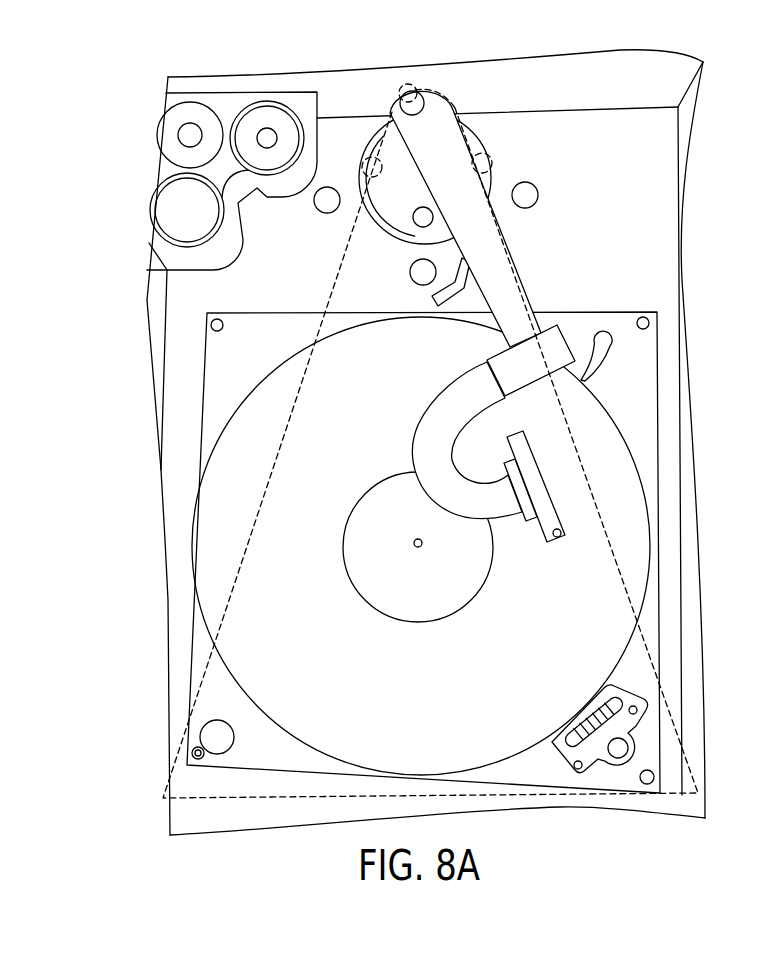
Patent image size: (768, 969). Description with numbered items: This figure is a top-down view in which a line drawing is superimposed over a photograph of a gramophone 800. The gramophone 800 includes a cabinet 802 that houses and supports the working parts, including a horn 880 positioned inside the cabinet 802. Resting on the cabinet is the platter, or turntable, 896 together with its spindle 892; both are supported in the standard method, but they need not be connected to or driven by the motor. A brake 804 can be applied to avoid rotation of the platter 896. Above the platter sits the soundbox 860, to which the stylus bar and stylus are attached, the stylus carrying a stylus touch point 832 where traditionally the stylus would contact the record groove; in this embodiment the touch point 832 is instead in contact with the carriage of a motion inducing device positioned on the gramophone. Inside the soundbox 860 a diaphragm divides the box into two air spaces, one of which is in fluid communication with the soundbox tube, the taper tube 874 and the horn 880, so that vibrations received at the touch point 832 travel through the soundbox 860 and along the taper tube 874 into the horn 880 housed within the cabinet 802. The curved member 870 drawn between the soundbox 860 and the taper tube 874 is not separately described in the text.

The gramophone 800 is at (113, 393).
The cabinet 802 is at (630, 138).
The brake 804 is at (601, 350).
The stylus touch point 832 is at (555, 540).
The soundbox 860 is at (547, 478).
The curved tonearm section 870 is at (418, 432).
The taper tube 874 is at (497, 217).
The horn 880 is at (168, 746).
The spindle 892 is at (414, 545).
The platter (turntable) 896 is at (600, 638).